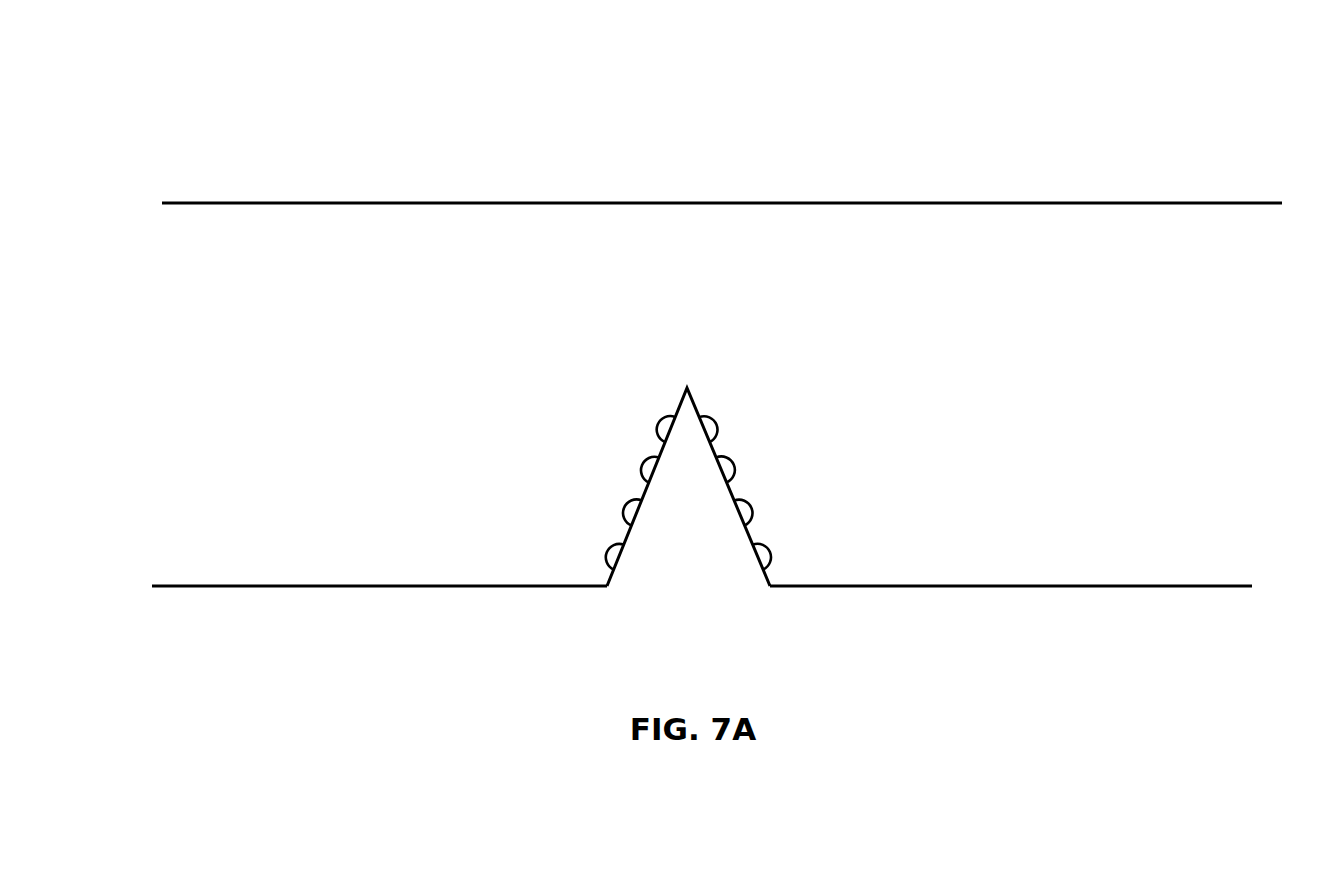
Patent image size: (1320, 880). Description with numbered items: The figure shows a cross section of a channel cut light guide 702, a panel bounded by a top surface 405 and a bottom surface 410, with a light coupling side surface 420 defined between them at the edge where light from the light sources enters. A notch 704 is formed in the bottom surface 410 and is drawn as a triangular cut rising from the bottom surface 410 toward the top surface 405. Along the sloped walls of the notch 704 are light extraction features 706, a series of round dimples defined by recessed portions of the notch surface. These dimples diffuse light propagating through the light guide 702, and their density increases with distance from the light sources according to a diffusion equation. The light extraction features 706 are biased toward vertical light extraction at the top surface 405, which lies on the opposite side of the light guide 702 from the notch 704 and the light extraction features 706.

The channel cut light guide 702 is at (688, 230).
The top surface 405 is at (484, 203).
The bottom surface 410 is at (1043, 583).
The light coupling side surface 420 is at (328, 442).
The notch 704 is at (722, 580).
The light extraction features 706 is at (703, 421).